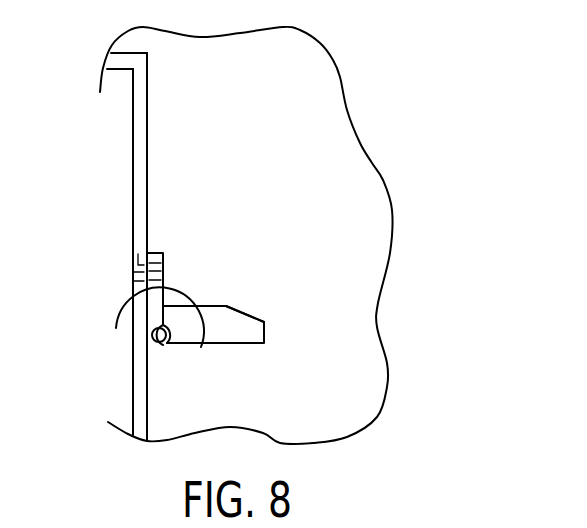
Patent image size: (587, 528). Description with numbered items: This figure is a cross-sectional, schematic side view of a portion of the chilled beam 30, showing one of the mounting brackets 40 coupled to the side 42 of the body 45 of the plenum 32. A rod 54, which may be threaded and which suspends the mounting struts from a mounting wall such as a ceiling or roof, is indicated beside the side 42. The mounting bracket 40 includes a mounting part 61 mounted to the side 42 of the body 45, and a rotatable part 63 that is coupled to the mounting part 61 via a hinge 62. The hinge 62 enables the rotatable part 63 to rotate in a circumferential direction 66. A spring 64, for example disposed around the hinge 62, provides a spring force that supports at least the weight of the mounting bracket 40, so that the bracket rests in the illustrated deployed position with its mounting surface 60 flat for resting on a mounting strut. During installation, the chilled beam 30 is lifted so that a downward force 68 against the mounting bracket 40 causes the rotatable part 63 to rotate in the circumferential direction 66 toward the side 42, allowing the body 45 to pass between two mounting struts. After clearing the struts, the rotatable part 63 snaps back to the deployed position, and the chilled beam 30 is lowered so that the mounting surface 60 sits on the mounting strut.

The chilled beam 30 is at (378, 78).
The plenum 32 is at (197, 60).
The mounting bracket 40 is at (234, 314).
The side 42 is at (140, 170).
The body 45 is at (157, 78).
The rod 54 is at (138, 255).
The mounting surface 60 is at (243, 346).
The mounting part 61 is at (156, 256).
The hinge 62 is at (173, 327).
The rotatable part 63 is at (248, 325).
The spring 64 is at (160, 348).
The circumferential direction 66 is at (182, 375).
The downward force 68 is at (228, 284).